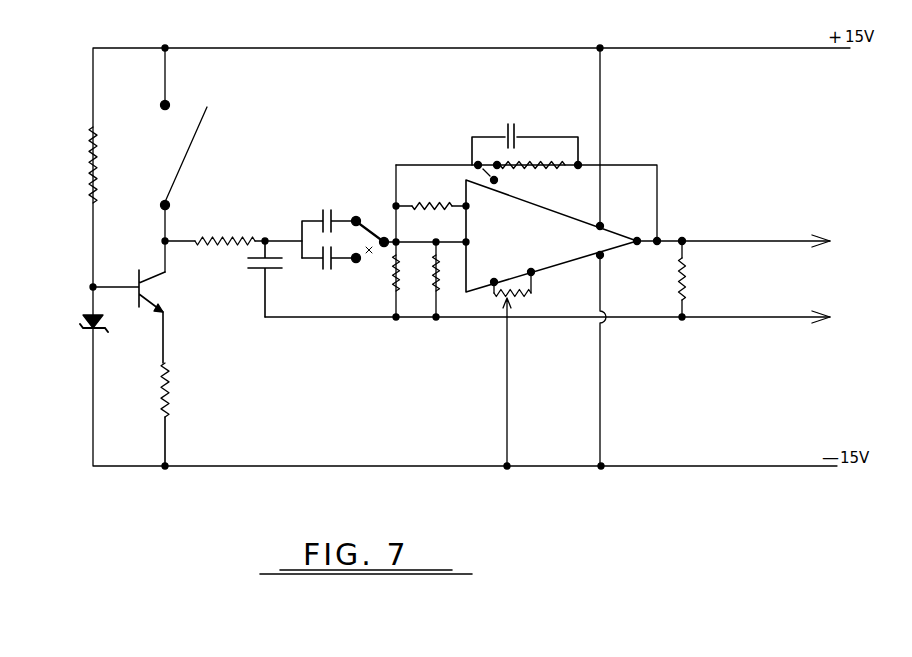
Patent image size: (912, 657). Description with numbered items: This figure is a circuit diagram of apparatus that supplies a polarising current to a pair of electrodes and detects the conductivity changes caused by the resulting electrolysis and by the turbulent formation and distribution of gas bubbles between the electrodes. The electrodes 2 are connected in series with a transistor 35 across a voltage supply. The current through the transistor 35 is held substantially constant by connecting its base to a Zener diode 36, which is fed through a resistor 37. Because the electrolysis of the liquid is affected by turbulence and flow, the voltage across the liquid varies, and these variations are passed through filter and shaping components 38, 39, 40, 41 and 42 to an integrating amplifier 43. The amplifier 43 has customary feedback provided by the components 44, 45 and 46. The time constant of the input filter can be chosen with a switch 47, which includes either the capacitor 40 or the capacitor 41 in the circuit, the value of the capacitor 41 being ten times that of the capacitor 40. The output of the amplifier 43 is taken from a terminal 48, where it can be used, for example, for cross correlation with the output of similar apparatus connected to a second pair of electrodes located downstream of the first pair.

The electrodes 2 is at (170, 104).
The transistor 35 is at (137, 283).
The Zener diode 36 is at (90, 331).
The resistor 37 is at (88, 160).
The filter and shaping component 38 is at (223, 244).
The filter and shaping component 39 is at (258, 275).
The capacitor 40 is at (322, 215).
The capacitor 41 is at (322, 262).
The filter and shaping component 42 is at (433, 267).
The integrating amplifier 43 is at (537, 229).
The feedback component 44 is at (550, 168).
The feedback component 45 is at (517, 130).
The feedback component 46 is at (394, 267).
The switch 47 is at (380, 246).
The terminal 48 is at (793, 243).